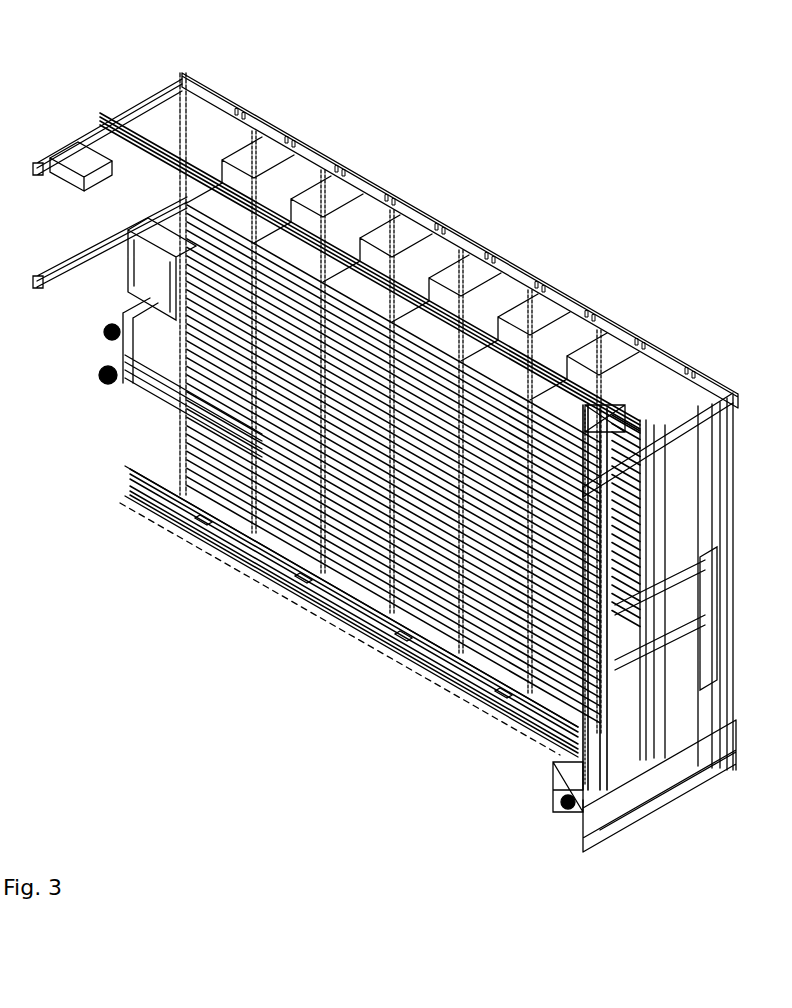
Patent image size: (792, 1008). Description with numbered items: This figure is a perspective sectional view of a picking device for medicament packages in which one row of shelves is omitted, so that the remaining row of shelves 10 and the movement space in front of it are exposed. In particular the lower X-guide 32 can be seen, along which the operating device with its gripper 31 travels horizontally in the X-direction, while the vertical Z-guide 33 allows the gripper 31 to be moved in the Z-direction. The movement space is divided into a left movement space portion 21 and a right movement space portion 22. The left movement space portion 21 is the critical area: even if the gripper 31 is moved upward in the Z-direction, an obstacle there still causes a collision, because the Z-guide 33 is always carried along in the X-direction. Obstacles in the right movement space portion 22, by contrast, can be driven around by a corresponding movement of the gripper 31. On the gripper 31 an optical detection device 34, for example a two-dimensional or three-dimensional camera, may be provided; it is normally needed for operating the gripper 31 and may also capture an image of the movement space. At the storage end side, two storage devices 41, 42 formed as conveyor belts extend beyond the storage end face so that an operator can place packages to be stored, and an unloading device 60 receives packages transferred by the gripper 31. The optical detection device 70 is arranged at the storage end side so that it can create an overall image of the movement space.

The shelves 10 is at (440, 333).
The left movement space portion 21 is at (400, 663).
The right movement space portion 22 is at (430, 705).
The gripper 31 is at (627, 773).
The X-guide 32 is at (573, 373).
The Z-guide 33 is at (612, 527).
The optical detection device 34 is at (570, 780).
The storage device 41 is at (165, 372).
The storage device 42 is at (155, 396).
The unloading device 60 is at (153, 270).
The optical detection device 70 is at (83, 160).